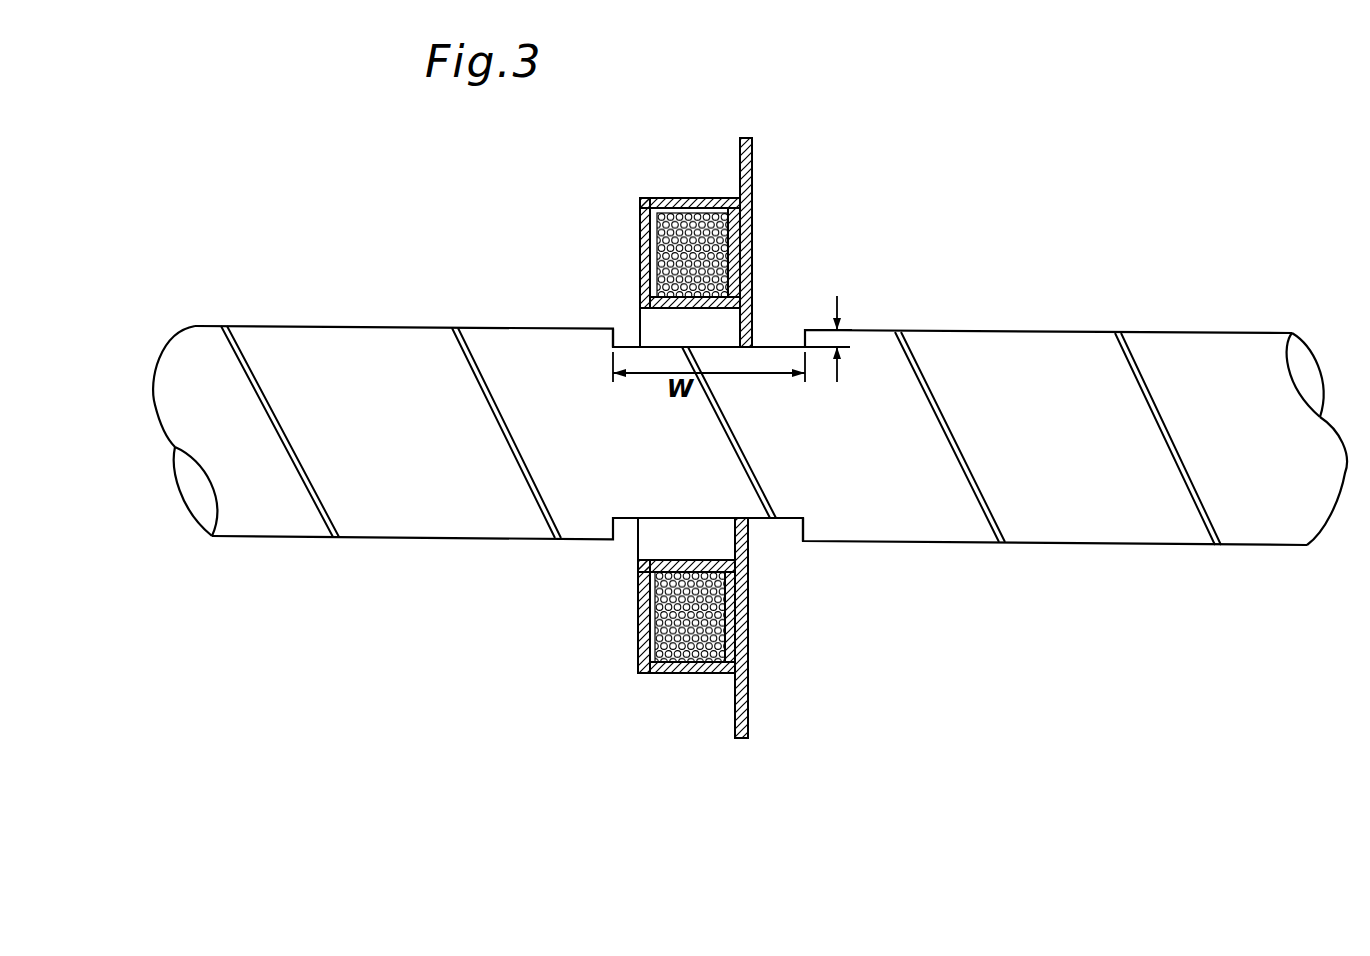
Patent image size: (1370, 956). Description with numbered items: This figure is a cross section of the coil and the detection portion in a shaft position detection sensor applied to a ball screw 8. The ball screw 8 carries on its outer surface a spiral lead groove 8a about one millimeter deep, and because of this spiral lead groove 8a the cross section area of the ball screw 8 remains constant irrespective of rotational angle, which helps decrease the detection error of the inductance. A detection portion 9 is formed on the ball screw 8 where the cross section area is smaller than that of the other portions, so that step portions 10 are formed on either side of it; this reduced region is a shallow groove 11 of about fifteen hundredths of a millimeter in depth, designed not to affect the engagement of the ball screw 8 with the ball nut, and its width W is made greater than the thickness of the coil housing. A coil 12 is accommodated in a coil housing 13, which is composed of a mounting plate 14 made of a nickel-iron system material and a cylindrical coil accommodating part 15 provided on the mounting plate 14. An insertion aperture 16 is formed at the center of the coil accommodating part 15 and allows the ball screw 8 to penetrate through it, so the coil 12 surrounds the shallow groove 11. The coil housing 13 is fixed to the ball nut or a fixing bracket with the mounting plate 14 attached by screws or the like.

The ball screw 8 is at (1043, 333).
The spiral lead groove 8a is at (322, 508).
The detection portion 9 is at (776, 310).
The step portions 10 is at (627, 345).
The shallow groove 11 is at (790, 343).
The coil 12 is at (680, 228).
The coil housing 13 is at (753, 158).
The mounting plate 14 is at (748, 713).
The coil accommodating part 15 is at (640, 233).
The insertion aperture 16 is at (677, 560).